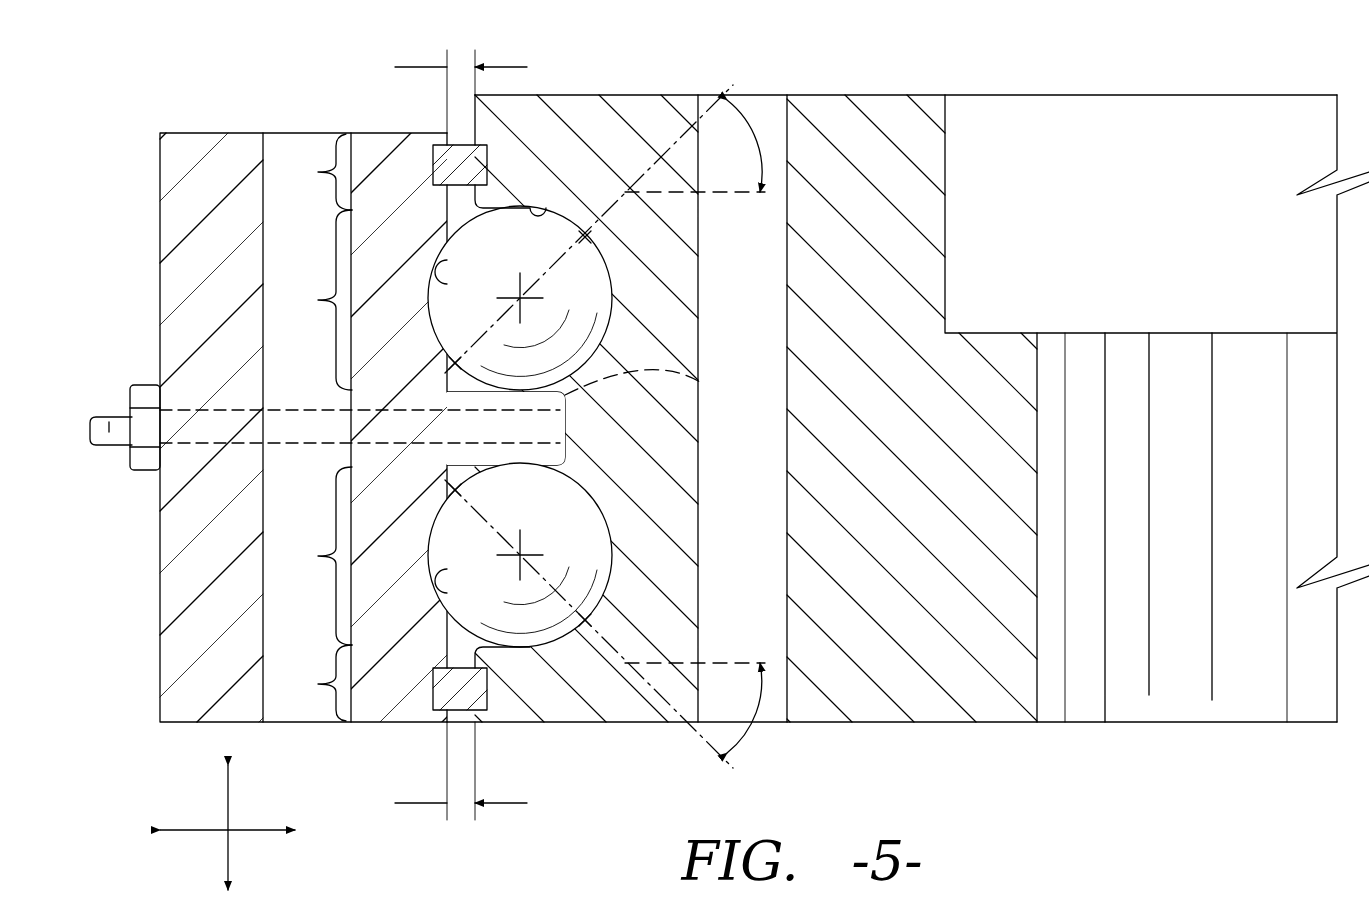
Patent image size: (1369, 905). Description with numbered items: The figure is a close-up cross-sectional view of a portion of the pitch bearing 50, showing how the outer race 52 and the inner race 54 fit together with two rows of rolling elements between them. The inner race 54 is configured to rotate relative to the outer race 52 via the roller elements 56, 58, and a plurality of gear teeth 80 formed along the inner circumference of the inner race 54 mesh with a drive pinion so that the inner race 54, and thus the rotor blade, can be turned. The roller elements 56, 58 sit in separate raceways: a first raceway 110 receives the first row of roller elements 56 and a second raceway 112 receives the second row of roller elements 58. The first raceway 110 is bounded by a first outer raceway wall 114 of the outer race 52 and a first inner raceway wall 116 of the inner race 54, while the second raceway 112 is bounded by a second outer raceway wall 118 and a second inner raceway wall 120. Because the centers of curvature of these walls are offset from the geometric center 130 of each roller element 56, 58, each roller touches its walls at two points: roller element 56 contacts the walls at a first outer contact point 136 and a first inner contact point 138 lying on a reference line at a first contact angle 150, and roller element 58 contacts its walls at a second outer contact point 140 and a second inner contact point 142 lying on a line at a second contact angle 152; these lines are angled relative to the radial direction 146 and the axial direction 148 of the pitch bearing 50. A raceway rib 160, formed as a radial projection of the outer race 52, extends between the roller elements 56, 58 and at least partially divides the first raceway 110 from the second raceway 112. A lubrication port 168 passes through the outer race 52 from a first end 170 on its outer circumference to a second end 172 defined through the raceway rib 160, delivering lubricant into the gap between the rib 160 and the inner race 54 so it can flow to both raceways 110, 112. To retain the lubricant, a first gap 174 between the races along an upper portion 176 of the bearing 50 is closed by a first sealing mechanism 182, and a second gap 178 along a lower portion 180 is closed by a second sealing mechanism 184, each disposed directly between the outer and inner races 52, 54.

The pitch bearing 50 is at (223, 98).
The outer race 52 is at (177, 275).
The inner race 54 is at (877, 108).
The first row of roller elements 56 is at (612, 328).
The second row of roller elements 58 is at (590, 540).
The gear teeth 80 is at (1149, 695).
The first raceway 110 is at (412, 427).
The second raceway 112 is at (306, 556).
The first outer raceway wall 114 is at (440, 258).
The first inner raceway wall 116 is at (583, 237).
The second outer raceway wall 118 is at (435, 598).
The second inner raceway wall 120 is at (585, 620).
The geometric center 130 is at (518, 296).
The first outer contact point 136 is at (452, 358).
The first inner contact point 138 is at (590, 240).
The second outer contact point 140 is at (452, 492).
The second inner contact point 142 is at (587, 617).
The radial direction 146 is at (262, 832).
The axial direction 148 is at (227, 806).
The first contact angle 150 is at (747, 122).
The second contact angle 152 is at (750, 728).
The raceway rib 160 is at (590, 473).
The lubrication port 168 is at (130, 408).
The first end 170 is at (90, 447).
The second end 172 is at (664, 378).
The first gap 174 is at (462, 68).
The upper portion 176 is at (306, 172).
The second gap 178 is at (460, 805).
The lower portion 180 is at (306, 683).
The first sealing mechanism 182 is at (487, 157).
The second sealing mechanism 184 is at (487, 700).